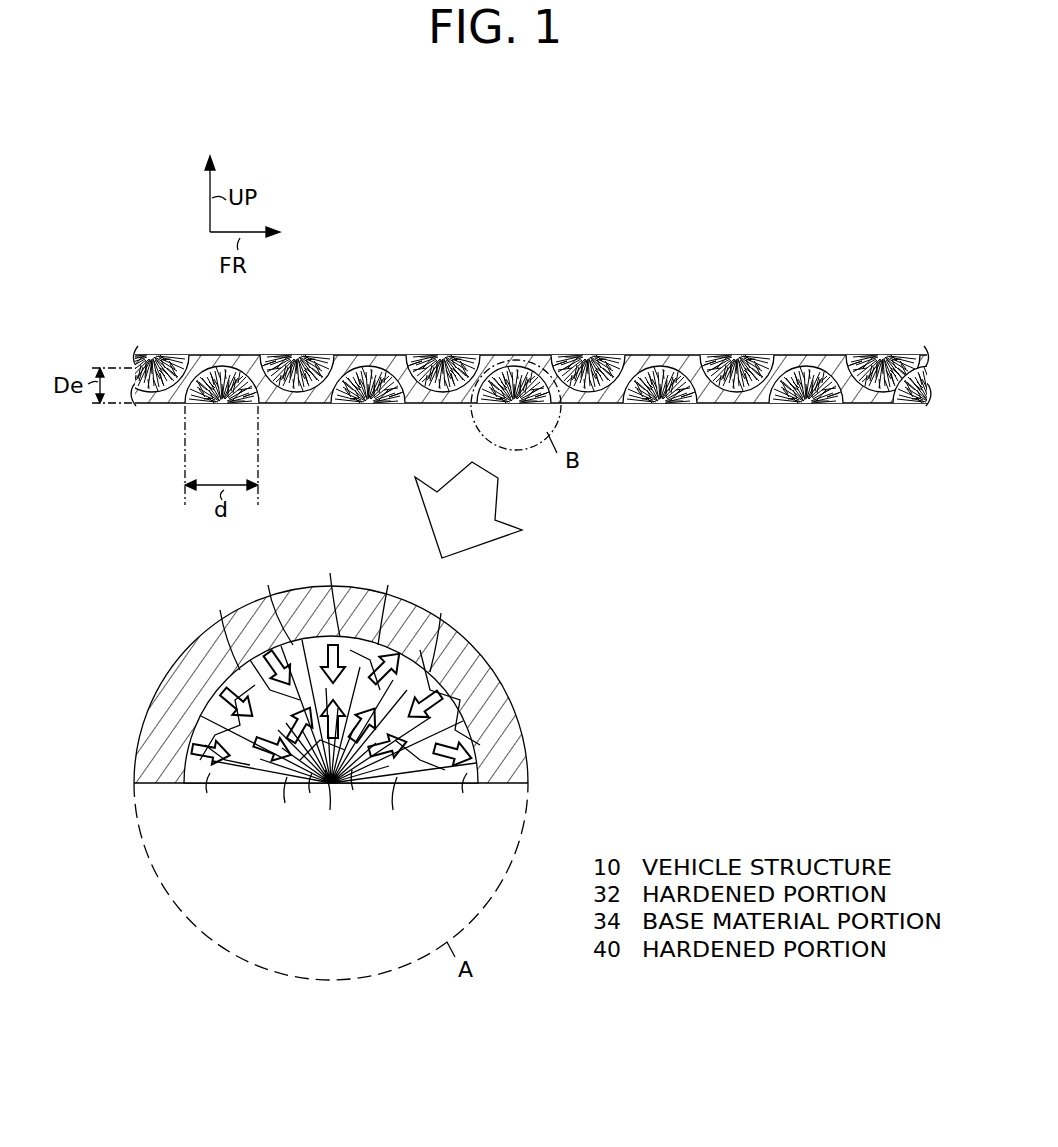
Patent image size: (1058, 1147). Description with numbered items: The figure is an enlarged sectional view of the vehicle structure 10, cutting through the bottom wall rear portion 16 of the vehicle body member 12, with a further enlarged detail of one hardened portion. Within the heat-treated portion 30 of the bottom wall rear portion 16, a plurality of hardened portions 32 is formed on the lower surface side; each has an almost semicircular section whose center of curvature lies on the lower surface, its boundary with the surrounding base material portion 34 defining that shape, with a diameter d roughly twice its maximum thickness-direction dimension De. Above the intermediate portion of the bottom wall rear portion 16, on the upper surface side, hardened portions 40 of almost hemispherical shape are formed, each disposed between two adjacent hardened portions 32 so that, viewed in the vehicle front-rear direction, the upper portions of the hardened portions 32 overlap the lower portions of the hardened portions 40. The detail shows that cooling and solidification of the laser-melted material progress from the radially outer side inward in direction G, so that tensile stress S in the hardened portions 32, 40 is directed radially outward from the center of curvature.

The vehicle structure 10 is at (531, 333).
The vehicle body panel 12 is at (531, 333).
The bottom wall rear portion 16 is at (770, 320).
The heat-treated portion 30 is at (658, 351).
The hardened portion 32 is at (218, 404).
The base material portion 34 is at (730, 404).
The hardened portion 40 is at (159, 361).